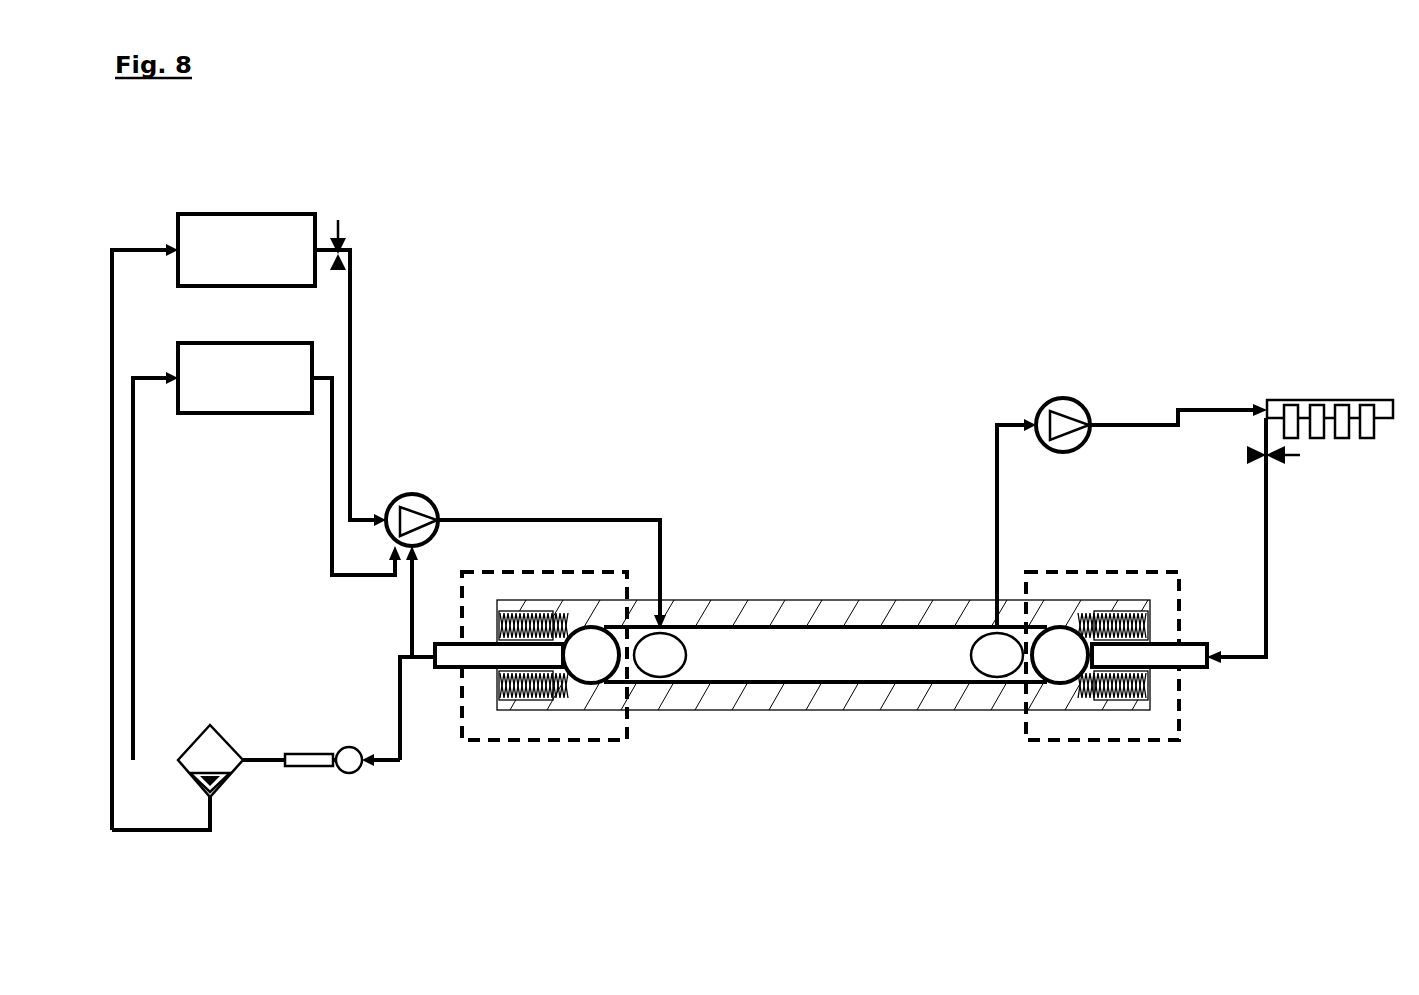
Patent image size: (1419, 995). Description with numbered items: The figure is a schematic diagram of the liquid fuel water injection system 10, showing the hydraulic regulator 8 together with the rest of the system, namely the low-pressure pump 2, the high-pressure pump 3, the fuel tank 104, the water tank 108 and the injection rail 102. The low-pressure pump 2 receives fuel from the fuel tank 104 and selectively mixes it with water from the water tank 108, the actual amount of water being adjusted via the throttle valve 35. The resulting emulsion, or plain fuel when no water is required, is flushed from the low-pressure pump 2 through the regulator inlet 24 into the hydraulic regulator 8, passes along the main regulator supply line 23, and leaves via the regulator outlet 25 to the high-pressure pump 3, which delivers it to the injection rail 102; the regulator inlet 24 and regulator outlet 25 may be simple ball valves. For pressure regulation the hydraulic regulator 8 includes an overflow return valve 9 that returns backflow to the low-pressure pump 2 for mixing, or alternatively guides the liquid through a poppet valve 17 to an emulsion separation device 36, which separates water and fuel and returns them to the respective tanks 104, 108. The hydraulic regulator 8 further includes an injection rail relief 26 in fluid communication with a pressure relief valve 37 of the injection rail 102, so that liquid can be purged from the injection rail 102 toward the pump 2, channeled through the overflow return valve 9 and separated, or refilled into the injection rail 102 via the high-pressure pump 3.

The water tank 108 is at (279, 217).
The throttle valve 35 is at (343, 238).
The fuel tank 104 is at (255, 414).
The low-pressure pump 2 is at (408, 497).
The emulsion separation device 36 is at (222, 738).
The poppet valve 17 is at (348, 778).
The injection system 10 is at (874, 264).
The high-pressure pump 3 is at (1063, 398).
The injection rail 102 is at (1305, 399).
The pressure relief valve 37 is at (1253, 468).
The main regulator supply line 23 is at (808, 648).
The regulator inlet 24 is at (658, 657).
The regulator outlet 25 is at (997, 650).
The overflow return valve 9 is at (522, 742).
The injection rail relief 26 is at (1080, 742).
The hydraulic regulator 8 is at (821, 694).